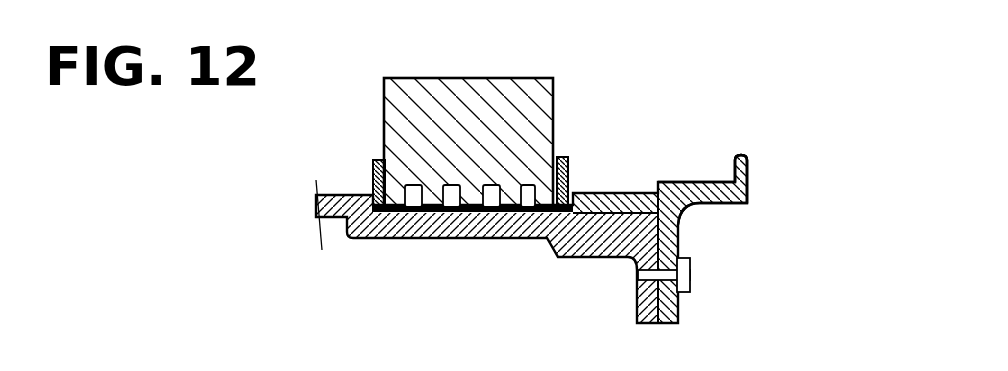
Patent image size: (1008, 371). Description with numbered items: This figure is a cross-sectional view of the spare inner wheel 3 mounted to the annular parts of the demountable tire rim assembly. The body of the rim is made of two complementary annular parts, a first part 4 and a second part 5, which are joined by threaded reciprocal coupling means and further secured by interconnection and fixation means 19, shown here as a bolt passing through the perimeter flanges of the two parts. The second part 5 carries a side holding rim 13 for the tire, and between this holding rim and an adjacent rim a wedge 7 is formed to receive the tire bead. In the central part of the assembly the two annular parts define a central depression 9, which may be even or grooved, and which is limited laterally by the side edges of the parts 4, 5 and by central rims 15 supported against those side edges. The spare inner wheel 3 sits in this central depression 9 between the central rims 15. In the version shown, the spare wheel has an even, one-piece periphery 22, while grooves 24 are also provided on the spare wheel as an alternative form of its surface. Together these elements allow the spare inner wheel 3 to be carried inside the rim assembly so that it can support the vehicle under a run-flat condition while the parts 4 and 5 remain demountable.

The spare inner wheel 3 is at (459, 165).
The first annular part 4 is at (350, 262).
The second annular part 5 is at (710, 223).
The wedge 7 is at (698, 182).
The central depression 9 is at (488, 240).
The side holding rim 13 is at (747, 182).
The central rims 15 is at (372, 163).
The interconnection and fixation means 19 is at (690, 275).
The even periphery 22 is at (431, 78).
The grooves 24 is at (404, 238).